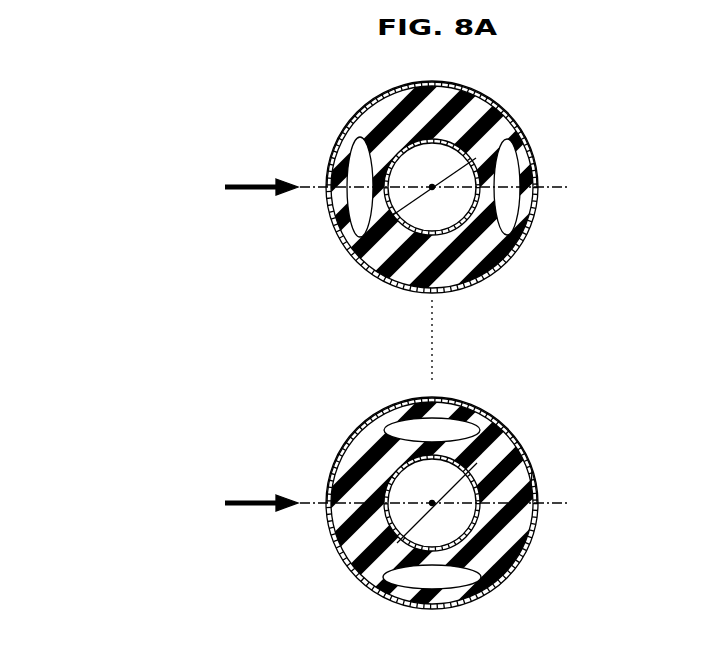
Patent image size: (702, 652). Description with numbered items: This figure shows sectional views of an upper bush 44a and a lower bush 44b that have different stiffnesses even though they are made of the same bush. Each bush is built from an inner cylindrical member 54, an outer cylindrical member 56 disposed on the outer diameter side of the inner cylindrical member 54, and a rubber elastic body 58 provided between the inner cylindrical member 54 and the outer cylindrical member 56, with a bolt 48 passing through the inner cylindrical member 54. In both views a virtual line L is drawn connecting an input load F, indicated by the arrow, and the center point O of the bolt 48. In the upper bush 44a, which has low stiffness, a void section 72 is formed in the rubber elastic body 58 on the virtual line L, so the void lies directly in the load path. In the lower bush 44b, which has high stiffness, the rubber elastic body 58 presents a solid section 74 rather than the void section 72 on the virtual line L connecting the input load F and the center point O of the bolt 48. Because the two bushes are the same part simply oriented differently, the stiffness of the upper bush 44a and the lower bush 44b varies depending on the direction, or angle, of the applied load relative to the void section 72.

The upper bush 44a is at (527, 108).
The lower bush 44b is at (527, 420).
The bolt 48 is at (410, 207).
The inner cylindrical member 54 is at (457, 140).
The outer cylindrical member 56 is at (532, 226).
The rubber elastic body 58 is at (456, 272).
The void section 72 is at (362, 221).
The solid section 74 is at (532, 480).
The center point O is at (433, 185).
The virtual line L is at (444, 346).
The input load F is at (250, 347).